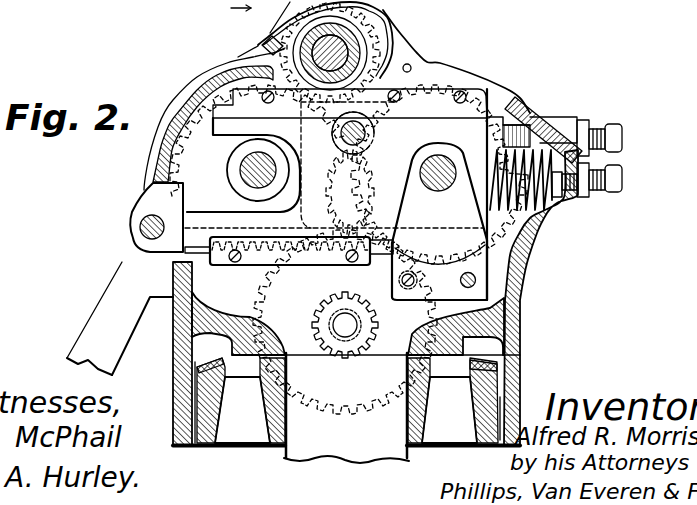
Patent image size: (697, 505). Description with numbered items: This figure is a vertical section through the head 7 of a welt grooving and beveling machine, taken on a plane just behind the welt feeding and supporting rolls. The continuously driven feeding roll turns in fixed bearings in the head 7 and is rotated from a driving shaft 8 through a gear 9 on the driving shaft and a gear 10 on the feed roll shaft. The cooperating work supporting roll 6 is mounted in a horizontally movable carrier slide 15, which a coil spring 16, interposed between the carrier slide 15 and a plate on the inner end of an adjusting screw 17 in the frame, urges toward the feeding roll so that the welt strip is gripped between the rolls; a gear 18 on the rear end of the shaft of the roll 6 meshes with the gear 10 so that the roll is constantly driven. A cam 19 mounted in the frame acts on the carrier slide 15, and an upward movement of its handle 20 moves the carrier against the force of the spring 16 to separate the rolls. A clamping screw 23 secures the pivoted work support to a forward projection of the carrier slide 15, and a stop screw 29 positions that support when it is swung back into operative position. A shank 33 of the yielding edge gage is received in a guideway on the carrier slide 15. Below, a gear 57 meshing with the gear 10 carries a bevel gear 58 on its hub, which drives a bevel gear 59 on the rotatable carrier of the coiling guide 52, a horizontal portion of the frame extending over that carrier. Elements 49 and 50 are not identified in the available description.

The work supporting roll 6 is at (239, 20).
The head of the machine 7 is at (516, 328).
The driving shaft 8 is at (355, 54).
The gear 9 is at (395, 24).
The gear 10 is at (224, 168).
The carrier slide 15 is at (462, 133).
The coil spring 16 is at (545, 145).
The adjusting screw 17 is at (622, 181).
The gear 18 is at (490, 105).
The cam 19 is at (163, 207).
The handle 20 is at (93, 319).
The clamping screw 23 is at (477, 283).
The stop screw 29 is at (399, 279).
The shank 33 is at (374, 140).
The gear 49 is at (397, 2).
The lever 50 is at (263, 48).
The coiling guide 52 is at (357, 452).
The gear 57 is at (340, 418).
The bevel gear 58 is at (345, 341).
The bevel gear 59 is at (496, 362).